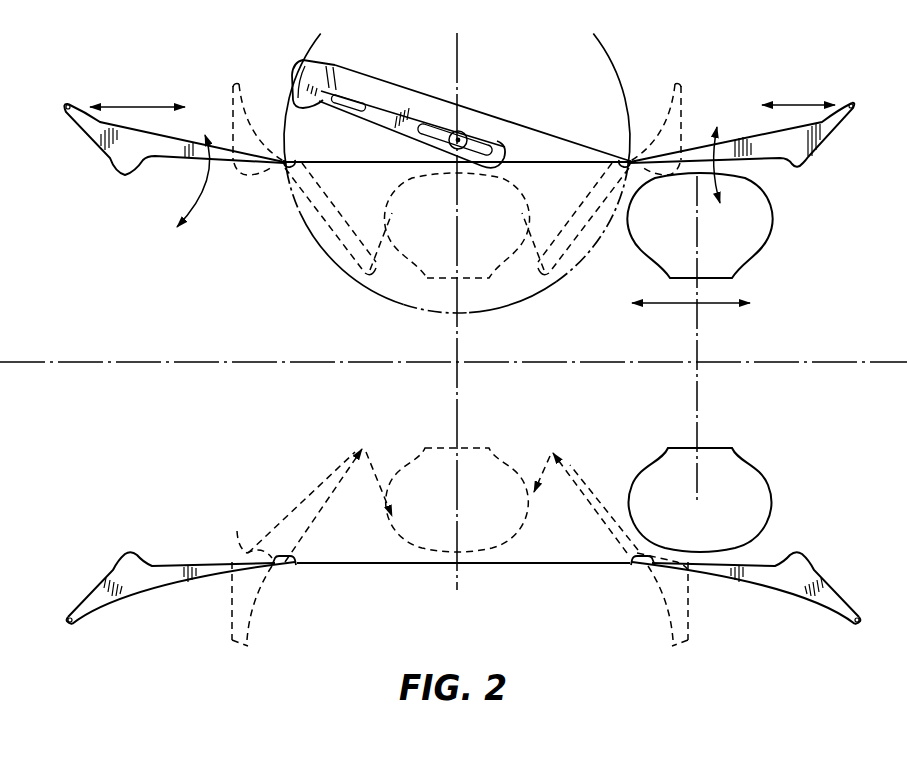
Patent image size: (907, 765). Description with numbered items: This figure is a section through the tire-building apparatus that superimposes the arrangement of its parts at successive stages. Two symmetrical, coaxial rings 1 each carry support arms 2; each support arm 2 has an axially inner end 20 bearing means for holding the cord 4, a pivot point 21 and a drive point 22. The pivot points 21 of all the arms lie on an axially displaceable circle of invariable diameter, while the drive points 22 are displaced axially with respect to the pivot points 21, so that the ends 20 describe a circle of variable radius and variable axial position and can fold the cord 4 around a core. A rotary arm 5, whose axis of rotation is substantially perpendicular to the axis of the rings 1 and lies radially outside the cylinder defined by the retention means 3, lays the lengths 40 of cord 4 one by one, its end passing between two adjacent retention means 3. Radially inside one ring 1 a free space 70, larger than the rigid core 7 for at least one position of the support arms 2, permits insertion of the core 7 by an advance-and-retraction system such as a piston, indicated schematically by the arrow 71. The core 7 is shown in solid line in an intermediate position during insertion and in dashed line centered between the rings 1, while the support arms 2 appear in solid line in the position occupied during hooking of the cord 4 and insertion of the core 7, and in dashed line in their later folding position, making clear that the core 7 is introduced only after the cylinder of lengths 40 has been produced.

The ring 1 is at (108, 92).
The support arm 2 is at (192, 580).
The retention means 3 is at (301, 567).
The cord 4 is at (532, 127).
The rotary arm 5 is at (305, 77).
The core 7 is at (765, 230).
The axially inner end 20 is at (318, 492).
The pivot point 21 is at (127, 160).
The drive point 22 is at (250, 645).
The length of cord 40 is at (385, 163).
The free space 70 is at (703, 367).
The arrow 71 is at (716, 308).